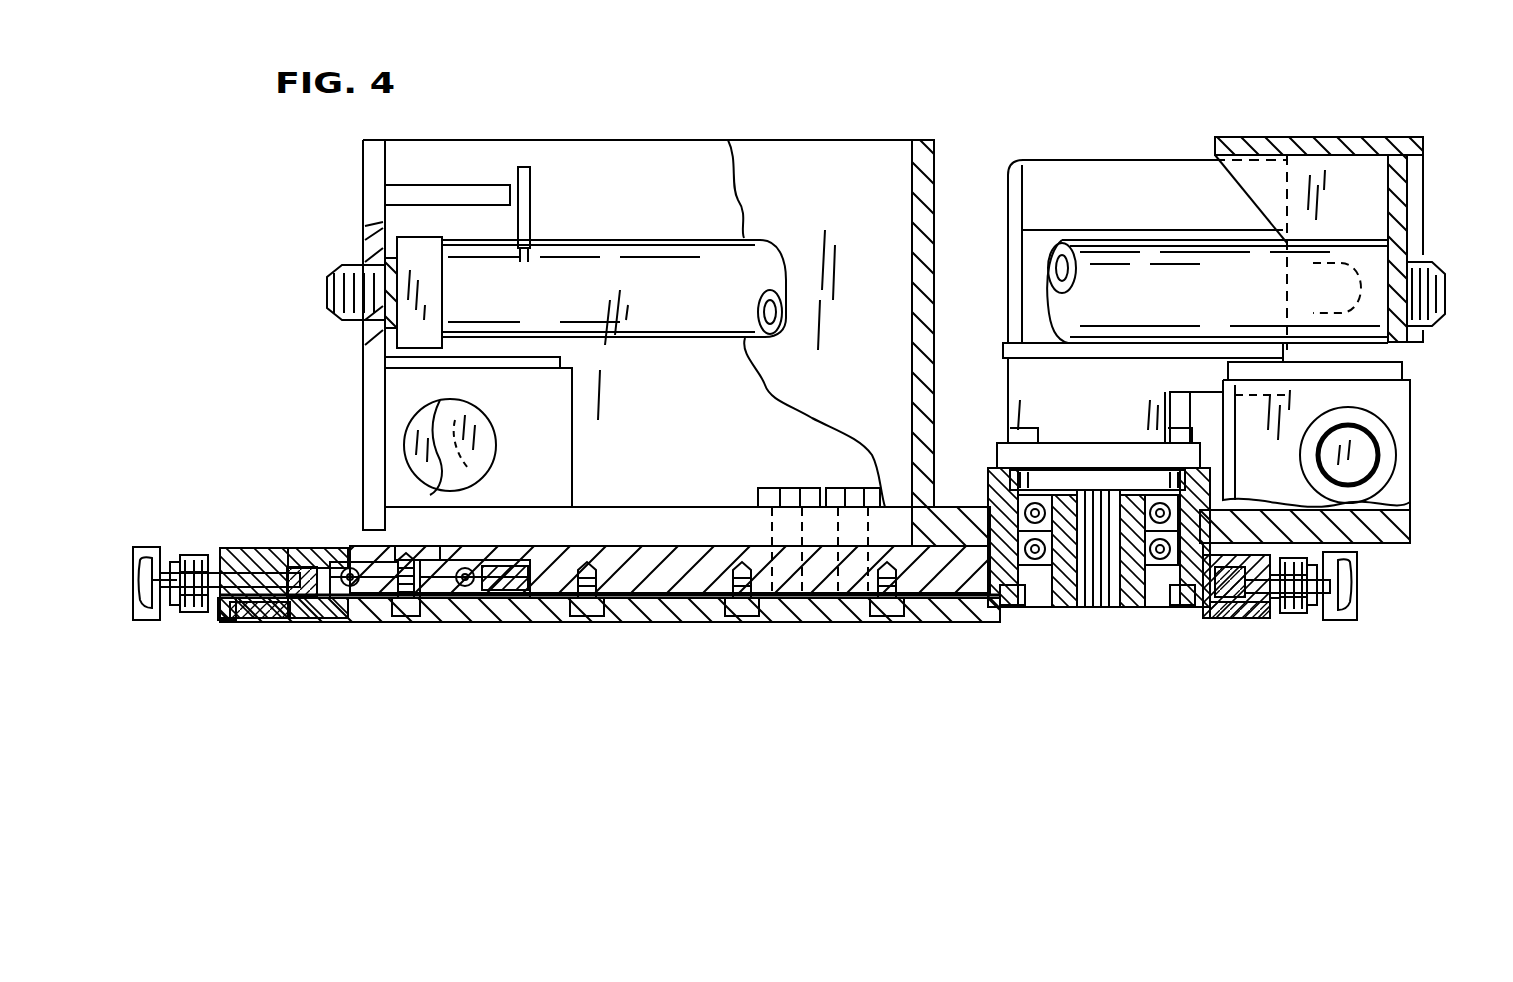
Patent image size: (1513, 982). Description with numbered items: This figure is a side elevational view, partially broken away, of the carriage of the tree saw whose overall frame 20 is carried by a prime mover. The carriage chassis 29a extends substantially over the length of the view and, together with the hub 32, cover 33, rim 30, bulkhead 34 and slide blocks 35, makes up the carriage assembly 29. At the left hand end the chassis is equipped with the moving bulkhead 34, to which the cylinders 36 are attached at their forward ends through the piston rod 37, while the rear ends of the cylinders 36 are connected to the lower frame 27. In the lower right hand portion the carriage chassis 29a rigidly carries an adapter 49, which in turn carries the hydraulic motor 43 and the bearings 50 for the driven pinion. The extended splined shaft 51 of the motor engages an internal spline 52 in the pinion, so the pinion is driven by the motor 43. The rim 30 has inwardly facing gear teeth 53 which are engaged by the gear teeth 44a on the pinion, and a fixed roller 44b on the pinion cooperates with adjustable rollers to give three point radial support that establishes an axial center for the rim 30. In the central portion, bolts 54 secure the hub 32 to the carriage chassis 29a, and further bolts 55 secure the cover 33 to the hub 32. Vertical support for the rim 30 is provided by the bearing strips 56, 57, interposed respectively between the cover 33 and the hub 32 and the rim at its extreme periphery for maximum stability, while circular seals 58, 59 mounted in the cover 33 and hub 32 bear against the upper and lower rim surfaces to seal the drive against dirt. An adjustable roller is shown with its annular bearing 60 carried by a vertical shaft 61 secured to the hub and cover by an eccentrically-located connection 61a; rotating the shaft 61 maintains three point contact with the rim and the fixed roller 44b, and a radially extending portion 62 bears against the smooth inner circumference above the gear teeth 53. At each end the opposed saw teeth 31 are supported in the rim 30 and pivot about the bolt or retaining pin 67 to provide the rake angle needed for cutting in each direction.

The frame 20 is at (170, 562).
The lower frame 27 is at (1405, 212).
The carriage assembly 29 is at (773, 137).
The carriage chassis 29a is at (1410, 538).
The rim 30 is at (1318, 615).
The saw teeth 31 is at (141, 621).
The hub 32 is at (664, 546).
The cover 33 is at (684, 624).
The bulkhead 34 is at (936, 160).
The slide blocks 35 is at (492, 432).
The cylinders 36 is at (618, 240).
The piston rod 37 is at (327, 285).
The hydraulic motor 43 is at (1060, 175).
The gear teeth 44a is at (1010, 607).
The fixed roller 44b is at (1180, 607).
The adapter 49 is at (990, 490).
The bearings 50 is at (1056, 607).
The splined shaft 51 is at (1092, 609).
The internal spline 52 is at (1126, 609).
The gear teeth 53 is at (300, 597).
The bolts 54 is at (790, 490).
The bolts 55 is at (742, 622).
The bearing 56 is at (255, 608).
The bearing 57 is at (262, 565).
The circular seal 58 is at (222, 606).
The circular seal 59 is at (235, 555).
The annular bearing 60 is at (460, 600).
The vertical shaft 61 is at (368, 600).
The eccentrically-located connection 61a is at (408, 556).
The radially extending portion 62 is at (508, 600).
The bolt 67 is at (193, 610).